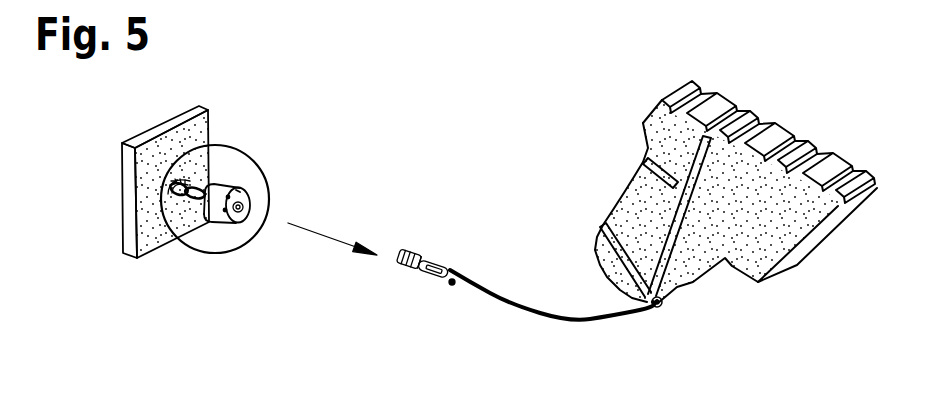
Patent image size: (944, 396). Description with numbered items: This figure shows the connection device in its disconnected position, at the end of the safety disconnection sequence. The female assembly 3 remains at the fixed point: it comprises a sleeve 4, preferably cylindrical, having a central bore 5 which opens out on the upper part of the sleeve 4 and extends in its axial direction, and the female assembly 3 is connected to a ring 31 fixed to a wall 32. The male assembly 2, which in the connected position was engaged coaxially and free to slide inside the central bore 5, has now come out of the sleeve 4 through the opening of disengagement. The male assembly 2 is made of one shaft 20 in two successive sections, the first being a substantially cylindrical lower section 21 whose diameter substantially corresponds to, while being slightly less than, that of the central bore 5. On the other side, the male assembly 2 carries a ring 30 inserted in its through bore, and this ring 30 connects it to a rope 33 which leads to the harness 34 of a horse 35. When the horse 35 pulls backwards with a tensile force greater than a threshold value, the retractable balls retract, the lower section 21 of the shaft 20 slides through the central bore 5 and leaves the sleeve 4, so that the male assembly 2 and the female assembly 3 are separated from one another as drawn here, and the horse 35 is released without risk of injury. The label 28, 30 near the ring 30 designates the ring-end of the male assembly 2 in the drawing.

The male assembly 2 is at (468, 241).
The female assembly 3 is at (230, 162).
The sleeve 4 is at (235, 219).
The central bore 5 is at (252, 209).
The shaft 20 is at (421, 256).
The lower section 21 is at (402, 267).
The connecting loop 28 is at (492, 252).
The ring 30 is at (496, 250).
The ring 31 is at (173, 191).
The wall 32 is at (148, 155).
The rope 33 is at (570, 321).
The harness 34 is at (603, 226).
The horse 35 is at (773, 152).